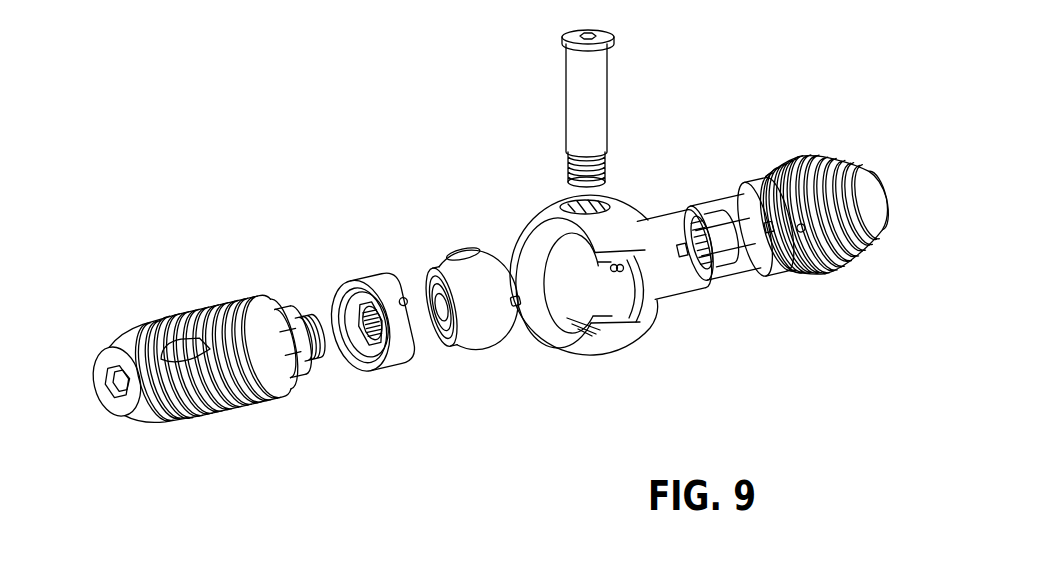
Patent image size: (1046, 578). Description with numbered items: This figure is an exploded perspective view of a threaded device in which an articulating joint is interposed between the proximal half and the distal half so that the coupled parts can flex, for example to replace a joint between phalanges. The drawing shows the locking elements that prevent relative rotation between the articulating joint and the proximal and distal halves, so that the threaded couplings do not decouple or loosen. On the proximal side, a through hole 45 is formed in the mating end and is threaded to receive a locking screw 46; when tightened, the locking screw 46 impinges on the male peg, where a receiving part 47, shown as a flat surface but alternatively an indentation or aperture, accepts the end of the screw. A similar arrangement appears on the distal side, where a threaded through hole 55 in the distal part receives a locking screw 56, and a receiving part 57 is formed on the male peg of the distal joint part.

The through hole 45 is at (402, 290).
The locking screw 46 is at (437, 352).
The receiving part 47 is at (333, 362).
The threaded through hole 55 is at (760, 283).
The locking screw 56 is at (837, 260).
The receiving part 57 is at (706, 212).